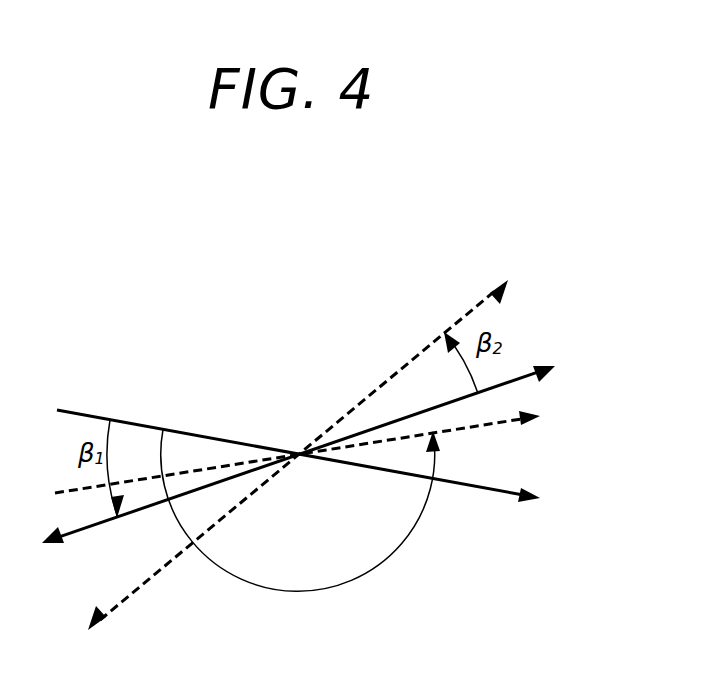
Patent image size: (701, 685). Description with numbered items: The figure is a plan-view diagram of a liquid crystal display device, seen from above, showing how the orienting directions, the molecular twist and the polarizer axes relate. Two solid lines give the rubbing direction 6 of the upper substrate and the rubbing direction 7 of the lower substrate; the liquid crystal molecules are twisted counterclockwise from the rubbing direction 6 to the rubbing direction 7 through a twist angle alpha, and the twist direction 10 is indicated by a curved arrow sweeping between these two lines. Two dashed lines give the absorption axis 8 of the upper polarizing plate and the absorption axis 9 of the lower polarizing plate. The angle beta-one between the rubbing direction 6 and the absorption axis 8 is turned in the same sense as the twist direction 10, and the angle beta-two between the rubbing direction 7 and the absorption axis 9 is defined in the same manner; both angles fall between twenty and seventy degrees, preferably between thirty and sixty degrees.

The rubbing direction of the upper substrate 6 is at (490, 487).
The rubbing direction of the lower substrate 7 is at (505, 418).
The absorption axis of the upper polarizing plate 8 is at (500, 390).
The absorption axis of the lower polarizing plate 9 is at (464, 316).
The twist direction 10 is at (342, 583).